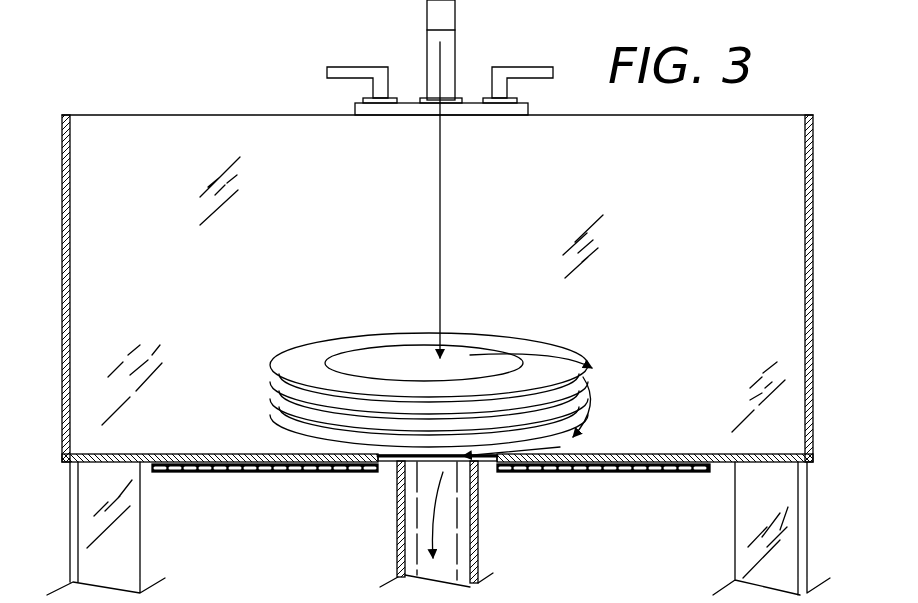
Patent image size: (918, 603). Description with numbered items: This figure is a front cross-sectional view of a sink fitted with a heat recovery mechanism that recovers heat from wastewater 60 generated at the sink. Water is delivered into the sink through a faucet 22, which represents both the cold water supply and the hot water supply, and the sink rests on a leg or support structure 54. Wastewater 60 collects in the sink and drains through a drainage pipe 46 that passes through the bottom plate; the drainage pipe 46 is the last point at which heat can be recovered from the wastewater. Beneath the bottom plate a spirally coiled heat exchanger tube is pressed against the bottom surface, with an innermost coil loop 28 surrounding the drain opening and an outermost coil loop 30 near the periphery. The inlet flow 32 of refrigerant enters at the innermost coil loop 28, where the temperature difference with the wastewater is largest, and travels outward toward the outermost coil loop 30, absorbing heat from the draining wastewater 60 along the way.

The faucet 22 is at (457, 15).
The innermost coil loop 28 is at (372, 472).
The outermost coil loop 30 is at (153, 473).
The inlet flow 32 is at (372, 473).
The drainage pipe 46 is at (478, 560).
The leg or support structure of sink 54 is at (140, 532).
The wastewater 60 is at (602, 392).